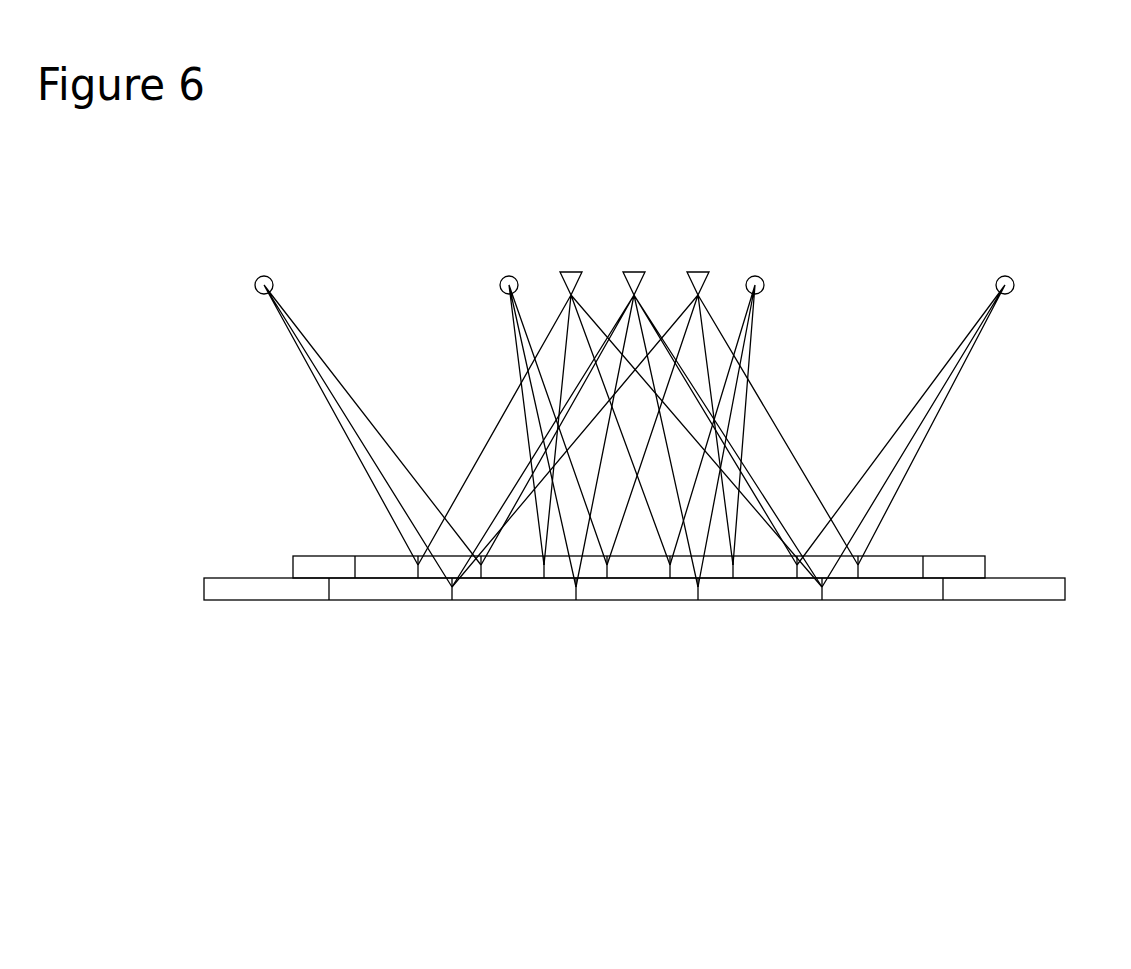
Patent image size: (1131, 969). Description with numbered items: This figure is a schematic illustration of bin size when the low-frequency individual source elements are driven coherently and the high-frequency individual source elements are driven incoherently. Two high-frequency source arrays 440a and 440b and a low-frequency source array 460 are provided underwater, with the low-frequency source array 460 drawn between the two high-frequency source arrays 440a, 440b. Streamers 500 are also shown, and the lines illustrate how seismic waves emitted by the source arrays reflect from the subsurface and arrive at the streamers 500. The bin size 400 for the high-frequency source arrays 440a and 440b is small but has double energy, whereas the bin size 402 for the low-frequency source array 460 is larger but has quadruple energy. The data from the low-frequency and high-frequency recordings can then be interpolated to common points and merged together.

The bin size 400 is at (924, 528).
The bin size 402 is at (822, 606).
The streamers 500 is at (261, 276).
The high-frequency source array 440a is at (563, 262).
The high-frequency source array 440b is at (705, 256).
The low-frequency source array 460 is at (626, 270).